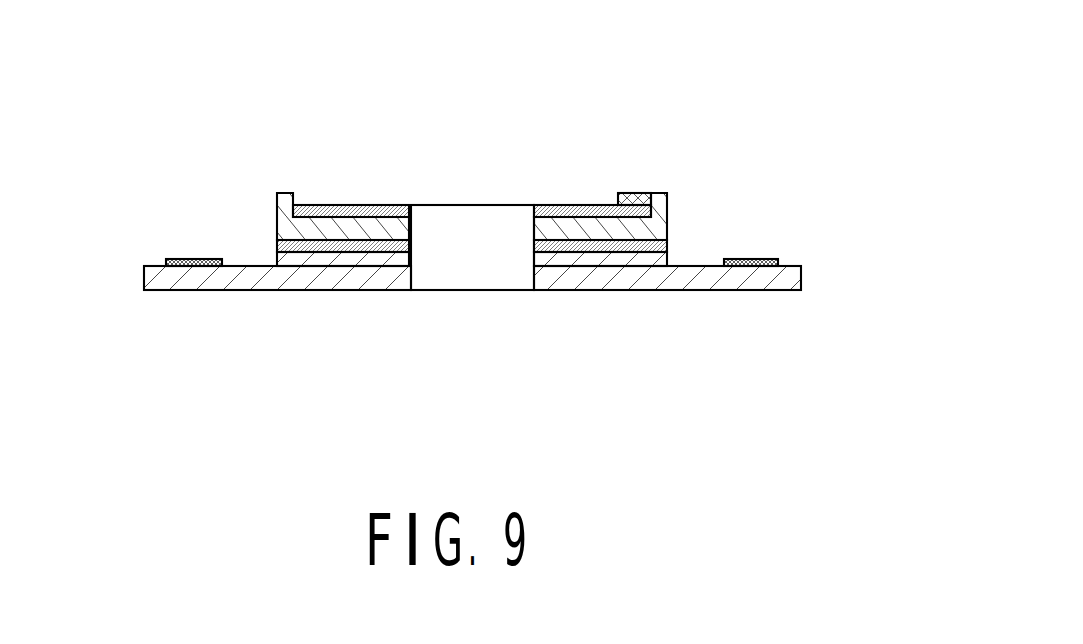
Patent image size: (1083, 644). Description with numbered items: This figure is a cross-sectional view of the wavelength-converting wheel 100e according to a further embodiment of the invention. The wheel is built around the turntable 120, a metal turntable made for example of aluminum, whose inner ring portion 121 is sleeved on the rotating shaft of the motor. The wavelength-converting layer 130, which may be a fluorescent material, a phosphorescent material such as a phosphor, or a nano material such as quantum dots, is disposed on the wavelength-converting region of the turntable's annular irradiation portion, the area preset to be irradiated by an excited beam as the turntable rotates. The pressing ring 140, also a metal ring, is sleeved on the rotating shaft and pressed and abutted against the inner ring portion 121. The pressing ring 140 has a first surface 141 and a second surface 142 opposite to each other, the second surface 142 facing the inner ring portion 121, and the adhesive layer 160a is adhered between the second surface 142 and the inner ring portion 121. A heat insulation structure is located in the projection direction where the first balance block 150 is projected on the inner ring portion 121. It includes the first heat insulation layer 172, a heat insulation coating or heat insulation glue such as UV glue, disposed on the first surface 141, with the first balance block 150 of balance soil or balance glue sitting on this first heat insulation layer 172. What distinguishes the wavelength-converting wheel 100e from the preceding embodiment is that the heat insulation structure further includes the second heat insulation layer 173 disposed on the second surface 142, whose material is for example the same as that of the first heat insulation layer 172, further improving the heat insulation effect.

The wavelength-converting wheel 100e is at (125, 88).
The turntable 120 is at (140, 282).
The inner ring portion 121 is at (556, 208).
The wavelength-converting layer 130 is at (195, 258).
The pressing ring 140 is at (278, 217).
The first surface 141 is at (358, 210).
The second surface 142 is at (332, 250).
The first balance block 150 is at (635, 195).
The adhesive layer 160a is at (383, 258).
The first heat insulation layer 172 is at (396, 207).
The second heat insulation layer 173 is at (669, 248).